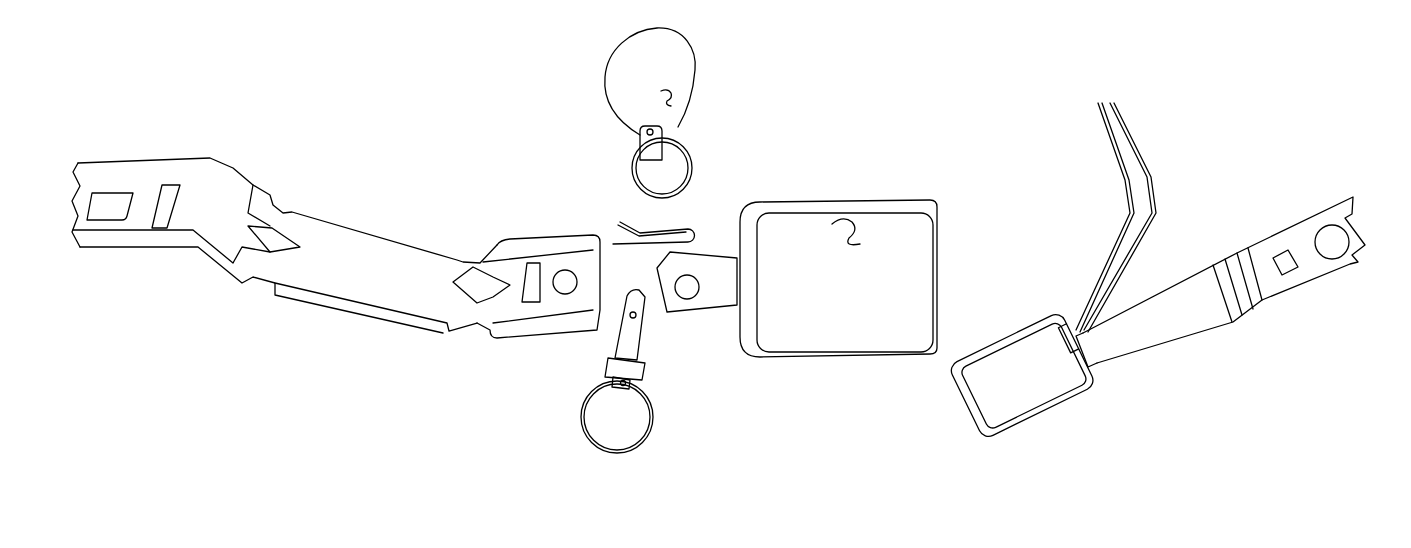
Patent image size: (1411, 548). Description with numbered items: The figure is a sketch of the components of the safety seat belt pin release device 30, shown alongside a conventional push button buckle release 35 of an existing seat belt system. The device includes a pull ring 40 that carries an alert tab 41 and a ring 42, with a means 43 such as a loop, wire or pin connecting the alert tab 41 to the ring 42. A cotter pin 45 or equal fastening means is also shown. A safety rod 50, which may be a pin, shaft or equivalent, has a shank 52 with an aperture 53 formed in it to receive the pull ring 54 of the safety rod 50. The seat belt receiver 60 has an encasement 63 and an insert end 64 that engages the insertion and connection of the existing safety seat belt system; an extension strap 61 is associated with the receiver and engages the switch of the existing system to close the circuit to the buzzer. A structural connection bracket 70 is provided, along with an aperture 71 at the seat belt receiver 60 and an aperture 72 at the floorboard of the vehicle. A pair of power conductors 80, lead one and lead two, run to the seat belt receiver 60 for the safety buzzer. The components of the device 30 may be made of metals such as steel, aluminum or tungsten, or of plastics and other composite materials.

In FIG. 6A, the safety seat belt pin release device 30 is at (406, 400).
In FIG. 6B, the conventional push button buckle release 35 is at (1210, 412).
In FIG. 6A, the pull ring 40 is at (572, 63).
In FIG. 6A, the alert tab 41 is at (670, 95).
In FIG. 6A, the ring 42 is at (690, 168).
In FIG. 6A, the means for connecting alert tab to ring 43 is at (663, 131).
In FIG. 6A, the cotter pin 45 is at (735, 147).
In FIG. 6A, the safety rod 50 is at (537, 430).
In FIG. 6A, the shank 52 is at (625, 338).
In FIG. 6A, the aperture in shank 53 is at (630, 383).
In FIG. 6A, the pull ring of safety rod 54 is at (645, 440).
In FIG. 6A, the seat belt receiver 60 is at (859, 381).
In FIG. 6B, the seat belt receiver 60 is at (1027, 398).
In FIG. 6A, the extension strap 61 is at (727, 347).
In FIG. 6A, the encasement 63 is at (848, 213).
In FIG. 6A, the insert end 64 is at (876, 259).
In FIG. 6A, the structural connection bracket 70 is at (308, 295).
In FIG. 6B, the structural connection bracket 70 is at (1242, 298).
In FIG. 6A, the aperture at seat belt receiver 71 is at (563, 277).
In FIG. 6A, the aperture at floorboard 72 is at (112, 213).
In FIG. 6B, the power conductors 80 is at (1115, 150).